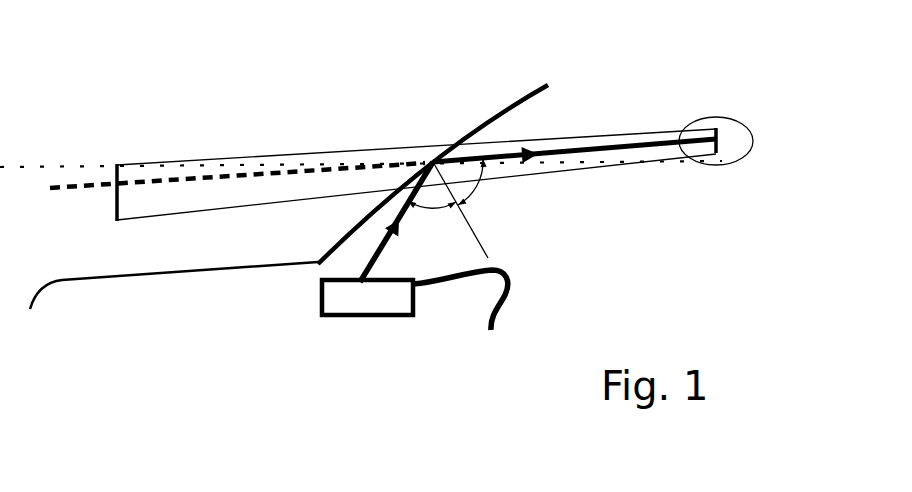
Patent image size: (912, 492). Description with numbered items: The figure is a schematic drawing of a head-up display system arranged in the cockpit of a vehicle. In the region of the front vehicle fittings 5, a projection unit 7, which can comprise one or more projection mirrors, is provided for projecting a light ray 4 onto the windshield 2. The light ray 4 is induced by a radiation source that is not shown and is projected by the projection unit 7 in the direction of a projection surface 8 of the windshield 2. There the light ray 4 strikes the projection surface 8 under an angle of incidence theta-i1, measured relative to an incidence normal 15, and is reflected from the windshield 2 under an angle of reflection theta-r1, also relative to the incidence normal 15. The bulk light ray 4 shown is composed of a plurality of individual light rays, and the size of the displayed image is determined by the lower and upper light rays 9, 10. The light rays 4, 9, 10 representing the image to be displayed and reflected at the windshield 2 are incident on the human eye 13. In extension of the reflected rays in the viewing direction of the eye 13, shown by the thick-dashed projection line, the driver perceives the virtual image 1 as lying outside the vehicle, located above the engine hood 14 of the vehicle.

The virtual image 1 is at (117, 208).
The windshield 2 is at (497, 115).
The light ray 4 is at (370, 233).
The front vehicle fittings 5 is at (470, 308).
The projection unit 7 is at (323, 304).
The projection surface 8 is at (432, 158).
The lower light ray 9 is at (375, 228).
The upper light ray 10 is at (445, 158).
The human eye 13 is at (742, 158).
The engine hood 14 is at (112, 280).
The incidence normal 15 is at (485, 248).